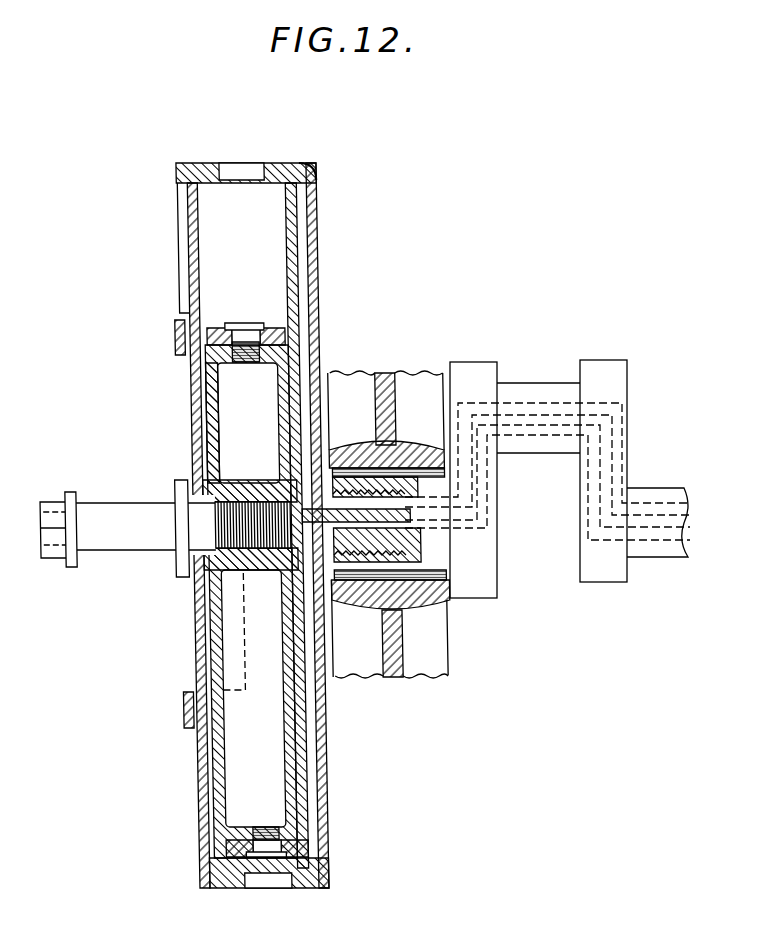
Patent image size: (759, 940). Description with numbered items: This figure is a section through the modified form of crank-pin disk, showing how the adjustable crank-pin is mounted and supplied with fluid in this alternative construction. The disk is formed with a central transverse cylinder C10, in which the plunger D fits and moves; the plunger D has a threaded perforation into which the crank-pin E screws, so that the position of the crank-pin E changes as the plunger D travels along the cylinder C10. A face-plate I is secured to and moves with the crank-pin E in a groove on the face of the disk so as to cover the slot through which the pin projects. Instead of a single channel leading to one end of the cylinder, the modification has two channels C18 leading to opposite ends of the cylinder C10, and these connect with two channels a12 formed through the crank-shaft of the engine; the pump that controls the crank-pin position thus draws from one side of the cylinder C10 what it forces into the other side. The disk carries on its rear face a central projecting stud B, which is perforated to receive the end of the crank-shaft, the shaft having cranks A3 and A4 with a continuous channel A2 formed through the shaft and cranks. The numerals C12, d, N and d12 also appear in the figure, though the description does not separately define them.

The channel C18 is at (306, 240).
The central transverse cylinder C10 is at (338, 775).
The cylinder wall C12 is at (205, 390).
The collar nut d is at (226, 335).
The face-plate I is at (192, 470).
The plunger D is at (258, 442).
The crank-pin E is at (166, 528).
The bearing standard N is at (410, 455).
The channel a12 is at (353, 490).
The central projecting stud B is at (410, 603).
The continuous channel A2 is at (405, 545).
The crank A3 is at (538, 403).
The crank A4 is at (673, 540).
The crank pin d12 is at (617, 452).